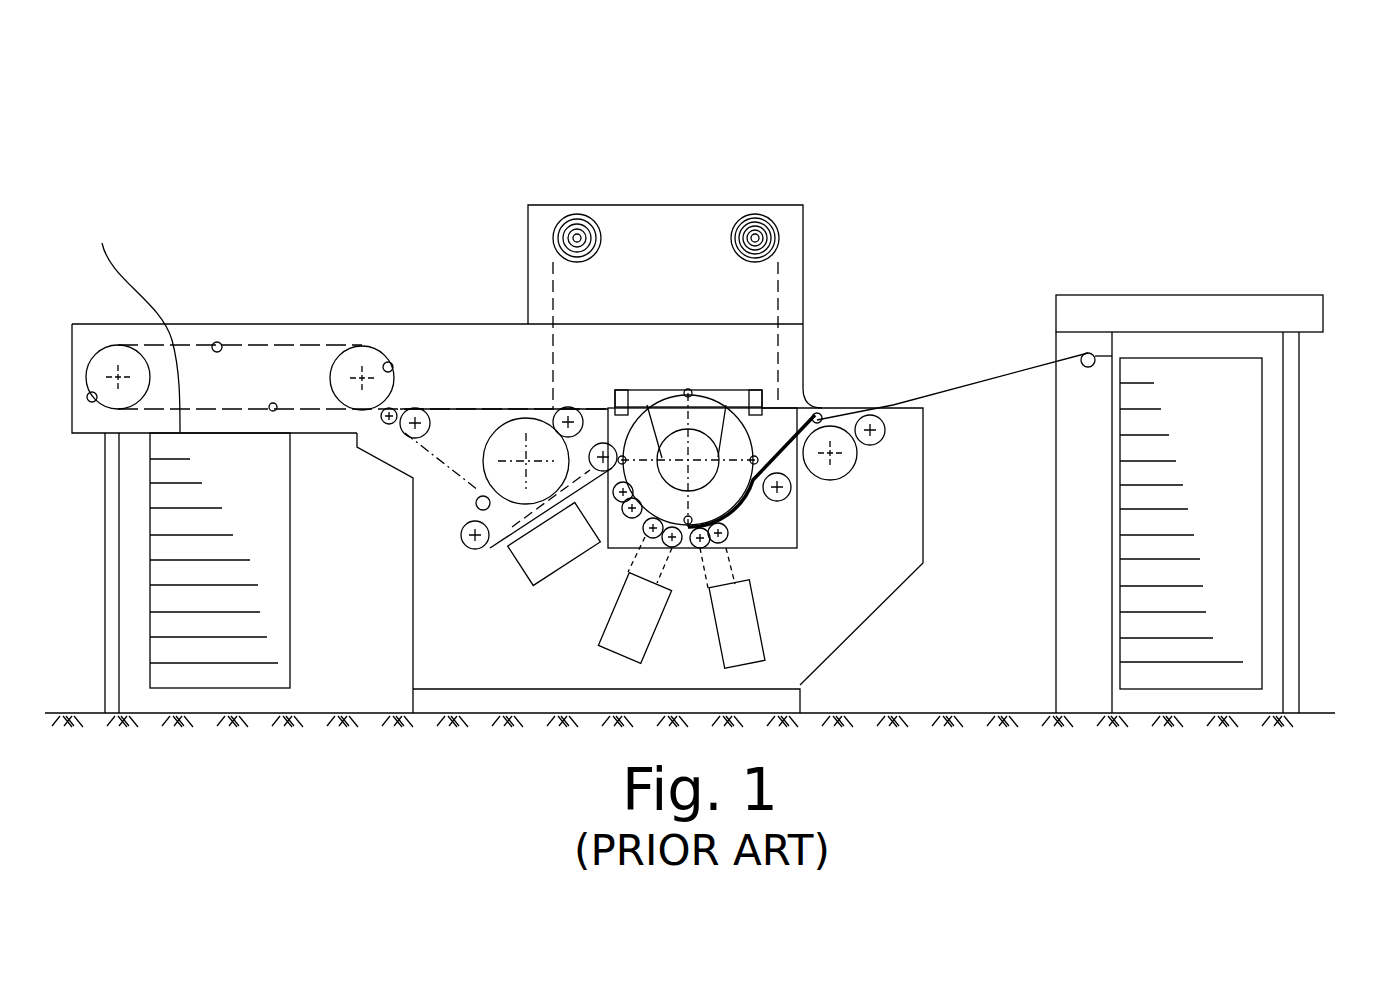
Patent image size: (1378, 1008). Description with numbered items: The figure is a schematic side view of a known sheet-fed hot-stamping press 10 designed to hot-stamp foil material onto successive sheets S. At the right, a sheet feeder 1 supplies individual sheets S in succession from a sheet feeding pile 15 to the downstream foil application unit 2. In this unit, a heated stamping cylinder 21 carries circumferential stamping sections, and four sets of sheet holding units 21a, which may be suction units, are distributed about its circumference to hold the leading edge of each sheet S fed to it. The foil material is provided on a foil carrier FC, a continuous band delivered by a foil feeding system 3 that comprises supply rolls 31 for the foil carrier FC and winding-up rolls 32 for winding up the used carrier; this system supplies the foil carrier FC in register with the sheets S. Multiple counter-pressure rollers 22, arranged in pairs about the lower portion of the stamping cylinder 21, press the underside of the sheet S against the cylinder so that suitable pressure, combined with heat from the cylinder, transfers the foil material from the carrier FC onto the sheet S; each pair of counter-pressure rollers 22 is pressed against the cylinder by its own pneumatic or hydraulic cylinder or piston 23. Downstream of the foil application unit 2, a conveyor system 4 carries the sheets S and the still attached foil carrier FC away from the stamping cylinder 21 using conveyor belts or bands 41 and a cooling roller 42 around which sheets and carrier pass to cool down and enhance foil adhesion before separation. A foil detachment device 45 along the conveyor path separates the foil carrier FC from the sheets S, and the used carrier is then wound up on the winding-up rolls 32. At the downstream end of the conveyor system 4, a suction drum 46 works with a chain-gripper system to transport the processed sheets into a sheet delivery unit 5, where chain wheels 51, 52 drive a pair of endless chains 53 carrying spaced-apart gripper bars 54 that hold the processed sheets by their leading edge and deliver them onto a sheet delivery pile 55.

The sheet-fed hot-stamping press 10 is at (941, 171).
The sheet feeder 1 is at (1193, 269).
The sheet feeding pile 15 is at (1247, 567).
The foil application unit 2 is at (813, 555).
The stamping cylinder 21 is at (722, 408).
The sheet holding units 21a is at (687, 392).
The counter-pressure rollers 22 is at (722, 535).
The pneumatic or hydraulic cylinder or piston 23 is at (566, 553).
The foil feeding system 3 is at (787, 303).
The supply rolls 31 is at (745, 216).
The winding-up rolls 32 is at (556, 222).
The conveyor system 4 is at (438, 483).
The conveyor belts or bands 41 is at (500, 542).
The cooling roller 42 is at (516, 428).
The foil detachment device 45 is at (553, 411).
The suction drum 46 is at (418, 410).
The sheet delivery unit 5 is at (250, 300).
The chain wheel 51 is at (373, 347).
The chain wheel 52 is at (97, 350).
The endless chains 53 is at (290, 347).
The gripper bars 54 is at (215, 340).
The sheet delivery pile 55 is at (278, 628).
The sheets S is at (1178, 358).
The foil carrier FC is at (779, 352).